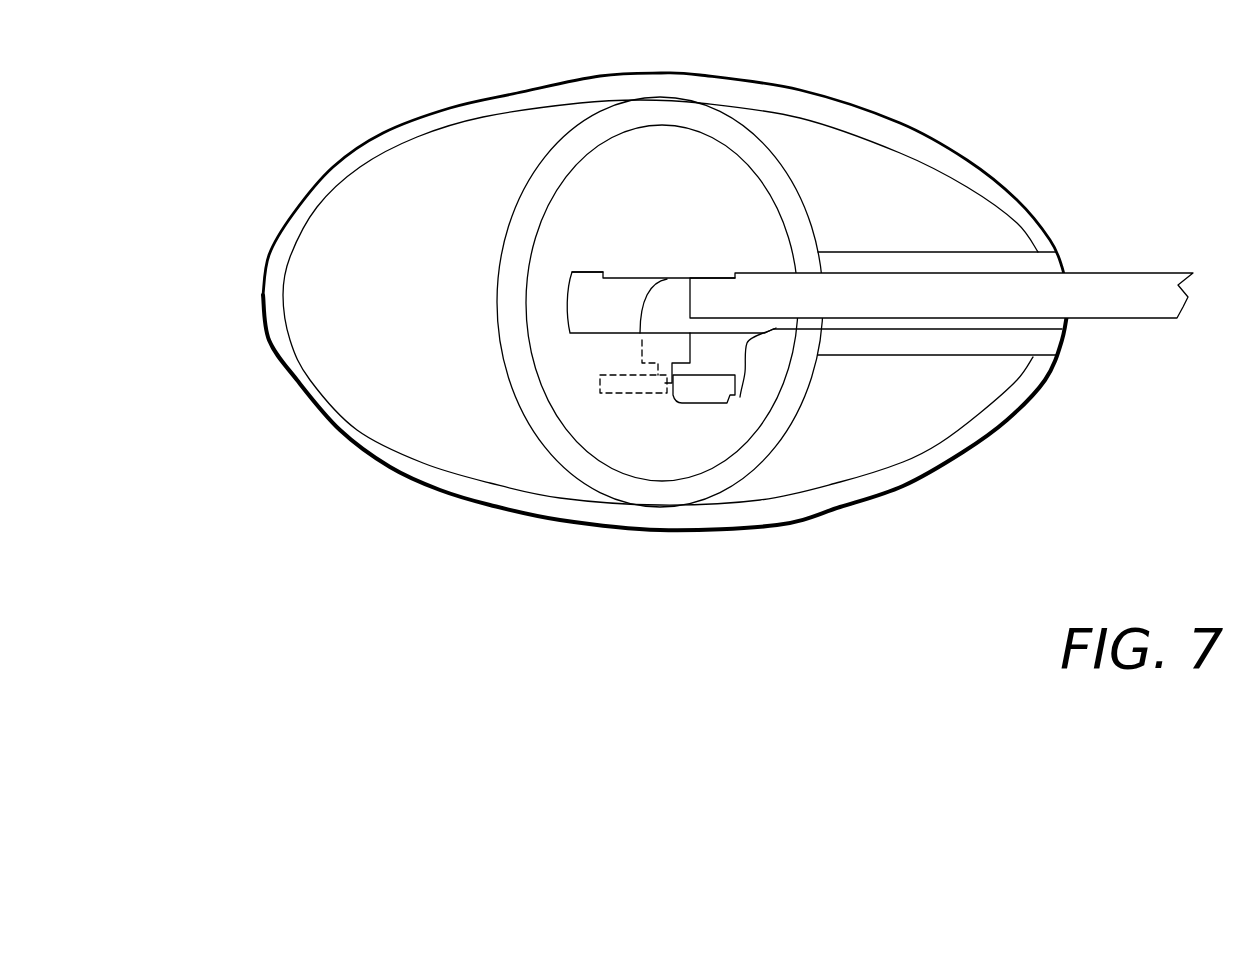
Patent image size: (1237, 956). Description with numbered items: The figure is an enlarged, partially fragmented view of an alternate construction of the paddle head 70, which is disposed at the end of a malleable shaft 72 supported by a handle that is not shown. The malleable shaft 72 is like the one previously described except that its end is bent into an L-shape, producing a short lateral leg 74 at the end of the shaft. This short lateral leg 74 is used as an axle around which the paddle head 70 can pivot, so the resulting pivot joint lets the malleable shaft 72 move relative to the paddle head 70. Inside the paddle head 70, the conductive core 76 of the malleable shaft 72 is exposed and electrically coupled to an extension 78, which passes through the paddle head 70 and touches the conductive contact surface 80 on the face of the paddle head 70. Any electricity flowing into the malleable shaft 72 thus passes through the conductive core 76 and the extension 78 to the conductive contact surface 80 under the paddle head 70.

The paddle head 70 is at (1013, 157).
The malleable shaft 72 is at (1093, 297).
The short lateral leg 74 is at (673, 340).
The conductive core 76 is at (713, 382).
The extension 78 is at (670, 380).
The conductive contact surface 80 is at (298, 398).